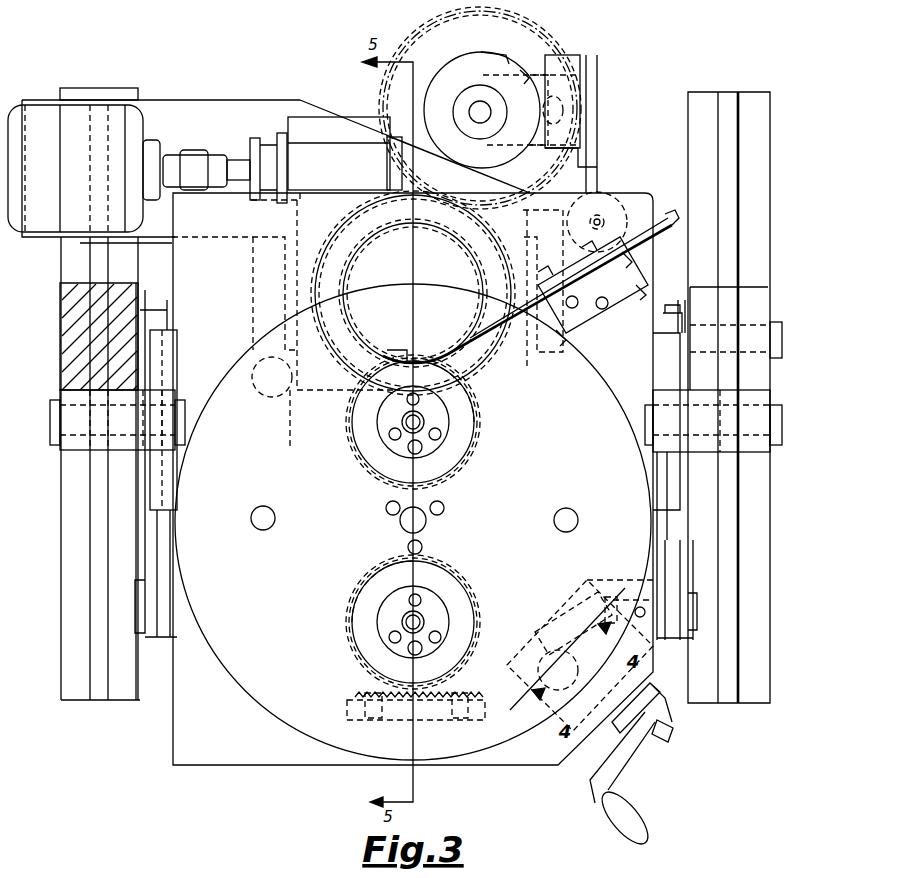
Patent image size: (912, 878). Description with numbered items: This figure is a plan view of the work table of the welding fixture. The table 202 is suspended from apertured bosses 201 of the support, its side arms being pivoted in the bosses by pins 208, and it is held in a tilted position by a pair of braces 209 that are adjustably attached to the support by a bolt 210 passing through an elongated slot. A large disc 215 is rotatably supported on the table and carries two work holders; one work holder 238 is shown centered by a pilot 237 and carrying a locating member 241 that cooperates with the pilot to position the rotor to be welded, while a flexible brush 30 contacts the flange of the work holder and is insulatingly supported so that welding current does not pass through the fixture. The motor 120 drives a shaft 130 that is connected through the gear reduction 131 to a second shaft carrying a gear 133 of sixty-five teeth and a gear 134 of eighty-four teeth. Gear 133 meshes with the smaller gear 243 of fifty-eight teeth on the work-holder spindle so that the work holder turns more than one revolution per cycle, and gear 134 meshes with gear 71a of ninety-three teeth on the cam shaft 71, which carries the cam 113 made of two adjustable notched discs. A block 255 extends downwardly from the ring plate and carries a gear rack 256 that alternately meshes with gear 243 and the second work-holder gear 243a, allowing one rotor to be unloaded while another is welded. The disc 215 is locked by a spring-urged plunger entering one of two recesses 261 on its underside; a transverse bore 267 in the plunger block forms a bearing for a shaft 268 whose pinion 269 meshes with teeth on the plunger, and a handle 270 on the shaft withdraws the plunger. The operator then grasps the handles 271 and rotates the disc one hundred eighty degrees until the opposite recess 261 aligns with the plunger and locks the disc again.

The flexible brush 30 is at (430, 355).
The cam shaft 71 is at (478, 112).
The gear 71a is at (545, 46).
The cam 113 is at (460, 72).
The motor 120 is at (50, 115).
The shaft 130 is at (238, 166).
The gear reduction 131 is at (318, 150).
The gear 133 is at (482, 255).
The gear 134 is at (328, 250).
The apertured bosses 201 is at (78, 450).
The table 202 is at (300, 765).
The pins 208 is at (57, 432).
The braces 209 is at (677, 642).
The bolt 210 is at (140, 625).
The disc 215 is at (253, 685).
The pilot 237 is at (412, 423).
The work holder 238 is at (368, 409).
The locating member 241 is at (436, 438).
The gear 243 is at (478, 443).
The gear 243a is at (362, 594).
The block 255 is at (347, 710).
The gear rack 256 is at (356, 690).
The recesses 261 is at (262, 372).
The transverse bore 267 is at (557, 620).
The shaft 268 is at (613, 700).
The pinion 269 is at (582, 612).
The handle 270 is at (644, 810).
The handles 271 is at (263, 514).